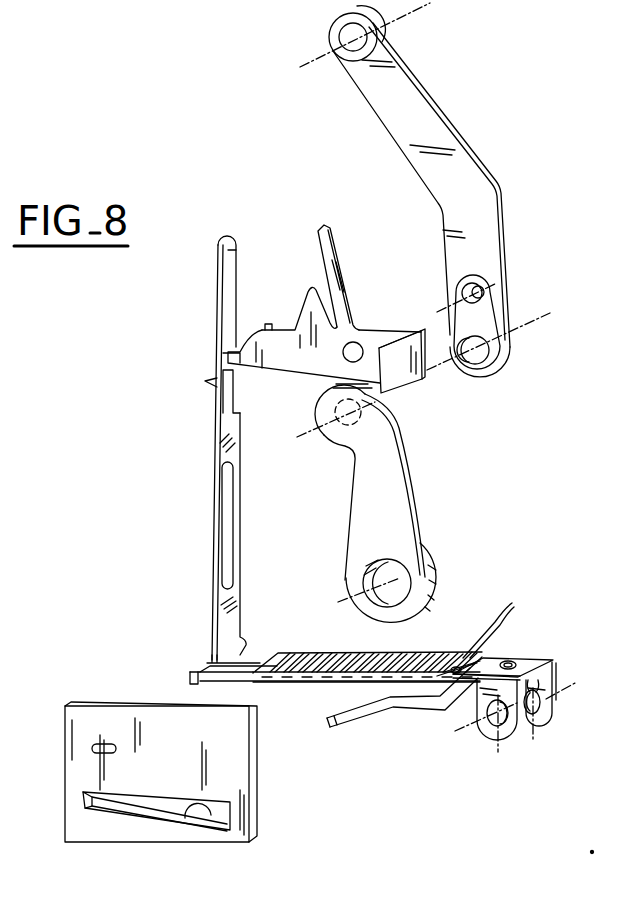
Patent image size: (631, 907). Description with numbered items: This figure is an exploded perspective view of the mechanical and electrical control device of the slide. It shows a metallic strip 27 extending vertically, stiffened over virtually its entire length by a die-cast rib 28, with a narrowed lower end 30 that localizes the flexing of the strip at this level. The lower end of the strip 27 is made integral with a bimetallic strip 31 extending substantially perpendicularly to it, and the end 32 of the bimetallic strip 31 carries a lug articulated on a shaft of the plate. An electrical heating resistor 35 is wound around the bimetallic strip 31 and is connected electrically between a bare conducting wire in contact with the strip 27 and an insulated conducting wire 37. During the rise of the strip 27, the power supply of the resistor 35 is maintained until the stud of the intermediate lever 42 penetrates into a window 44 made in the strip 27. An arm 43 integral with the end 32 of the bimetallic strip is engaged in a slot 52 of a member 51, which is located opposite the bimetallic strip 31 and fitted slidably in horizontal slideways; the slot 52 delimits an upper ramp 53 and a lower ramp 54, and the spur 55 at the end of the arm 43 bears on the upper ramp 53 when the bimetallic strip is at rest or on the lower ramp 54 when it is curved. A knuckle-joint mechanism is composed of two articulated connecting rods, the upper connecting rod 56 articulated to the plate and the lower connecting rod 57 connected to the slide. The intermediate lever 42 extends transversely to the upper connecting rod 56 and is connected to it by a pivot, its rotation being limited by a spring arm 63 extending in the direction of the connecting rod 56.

The metallic strip 27 is at (226, 624).
The die-cast rib 28 is at (231, 505).
The lower end 30 is at (213, 657).
The bimetallic strip 31 is at (238, 683).
The end of the bimetallic strip 32 is at (527, 660).
The electrical heating resistor 35 is at (342, 658).
The insulated conducting wire 37 is at (497, 613).
The intermediate lever 42 is at (323, 348).
The arm 43 is at (422, 712).
The window 44 is at (217, 403).
The member 51 is at (187, 833).
The slot 52 is at (143, 807).
The upper ramp 53 is at (107, 805).
The lower ramp 54 is at (220, 827).
The spur 55 is at (348, 728).
The upper connecting rod 56 is at (463, 175).
The lower connecting rod 57 is at (397, 498).
The spring arm 63 is at (330, 258).